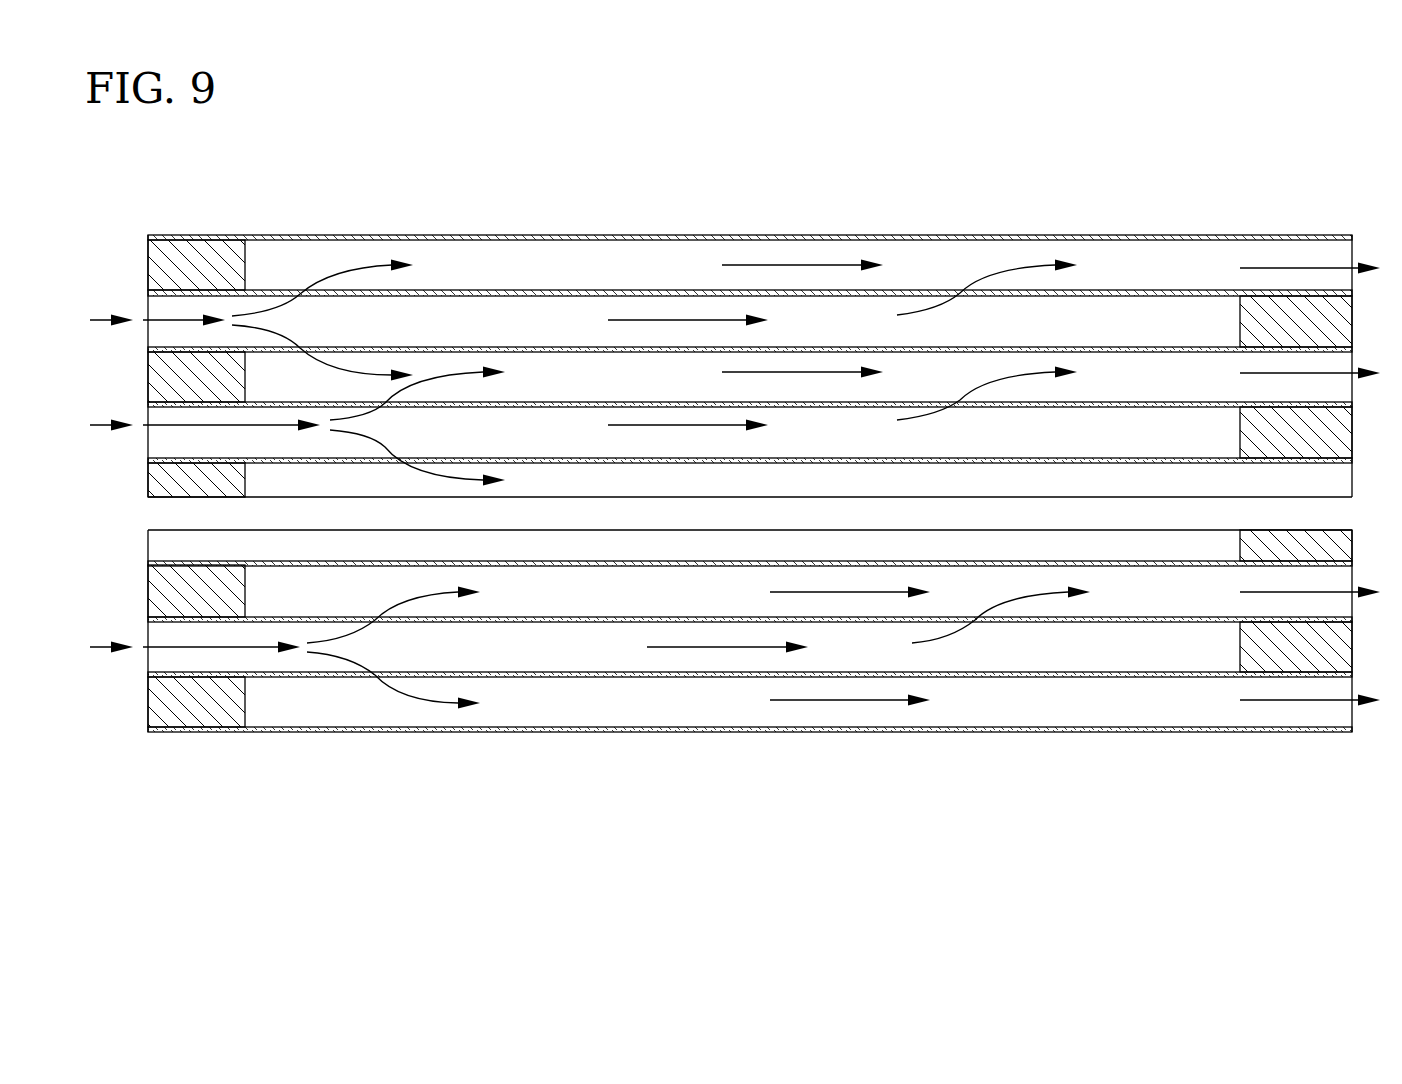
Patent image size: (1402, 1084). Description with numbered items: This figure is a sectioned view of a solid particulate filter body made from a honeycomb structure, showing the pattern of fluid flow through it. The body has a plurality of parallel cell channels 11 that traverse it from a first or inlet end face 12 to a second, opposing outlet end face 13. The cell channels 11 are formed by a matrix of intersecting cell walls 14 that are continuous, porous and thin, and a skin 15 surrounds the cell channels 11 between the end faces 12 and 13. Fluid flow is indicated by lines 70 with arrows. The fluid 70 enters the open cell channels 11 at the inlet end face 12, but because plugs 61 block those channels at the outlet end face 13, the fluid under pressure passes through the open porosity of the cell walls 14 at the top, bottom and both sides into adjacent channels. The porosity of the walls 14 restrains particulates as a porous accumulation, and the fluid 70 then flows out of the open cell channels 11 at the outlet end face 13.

The cell channels 11 is at (580, 640).
The first end face 12 is at (150, 673).
The second end face 13 is at (1352, 577).
The cell walls 14 is at (1048, 677).
The skin 15 is at (722, 235).
The plugs 61 is at (218, 367).
The fluid flow 70 is at (95, 318).